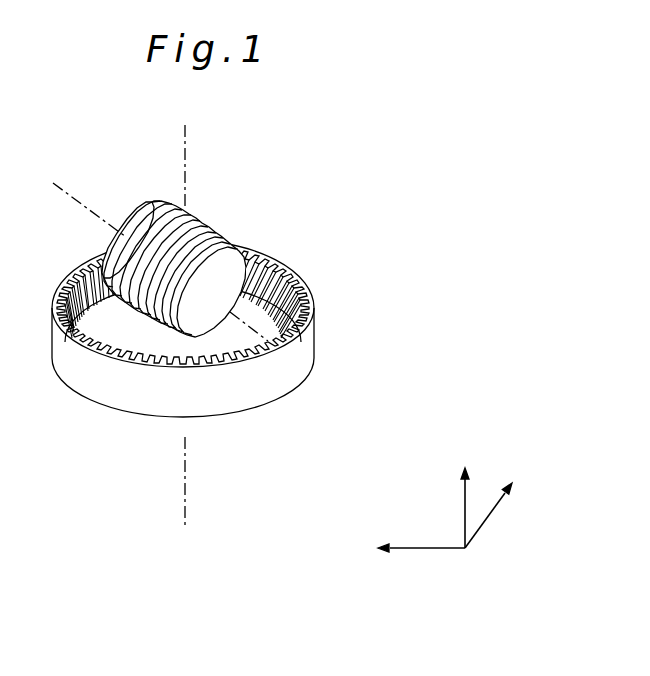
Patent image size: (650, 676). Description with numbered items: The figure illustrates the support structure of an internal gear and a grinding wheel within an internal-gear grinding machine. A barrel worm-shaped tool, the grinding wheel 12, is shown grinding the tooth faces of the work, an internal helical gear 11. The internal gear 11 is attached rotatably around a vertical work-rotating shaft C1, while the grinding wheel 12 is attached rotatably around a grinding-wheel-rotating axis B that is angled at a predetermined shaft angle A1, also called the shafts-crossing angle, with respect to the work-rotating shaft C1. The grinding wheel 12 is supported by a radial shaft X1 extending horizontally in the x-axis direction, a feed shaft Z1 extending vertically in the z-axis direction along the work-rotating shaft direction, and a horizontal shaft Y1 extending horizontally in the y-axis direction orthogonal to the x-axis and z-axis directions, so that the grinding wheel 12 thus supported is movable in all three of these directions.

The internal gear 11 is at (282, 261).
The grinding wheel 12 is at (203, 231).
The shaft angle A1 is at (181, 157).
The grinding-wheel-rotating axis B is at (104, 209).
The work-rotating shaft C1 is at (208, 480).
The radial shaft X1 is at (488, 516).
The horizontal shaft Y1 is at (430, 552).
The feed shaft Z1 is at (465, 513).